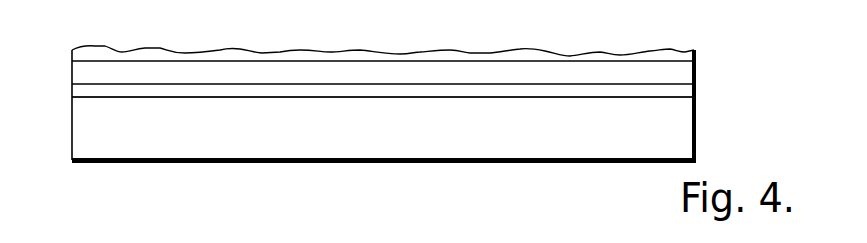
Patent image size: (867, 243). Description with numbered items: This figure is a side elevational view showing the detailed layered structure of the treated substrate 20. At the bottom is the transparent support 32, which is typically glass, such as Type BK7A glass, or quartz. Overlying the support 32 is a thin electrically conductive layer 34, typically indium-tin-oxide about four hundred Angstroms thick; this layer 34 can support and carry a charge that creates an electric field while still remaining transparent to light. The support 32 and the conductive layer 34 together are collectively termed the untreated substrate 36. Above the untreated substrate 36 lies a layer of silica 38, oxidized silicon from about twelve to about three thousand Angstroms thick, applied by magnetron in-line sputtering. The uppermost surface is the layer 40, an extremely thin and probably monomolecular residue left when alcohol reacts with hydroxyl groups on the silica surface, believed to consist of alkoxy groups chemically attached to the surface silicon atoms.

The substrate 20 is at (704, 52).
The transparent support 32 is at (573, 145).
The electrically conductive layer 34 is at (345, 97).
The untreated substrate 36 is at (65, 82).
The silica layer 38 is at (72, 72).
The layer 40 is at (128, 53).